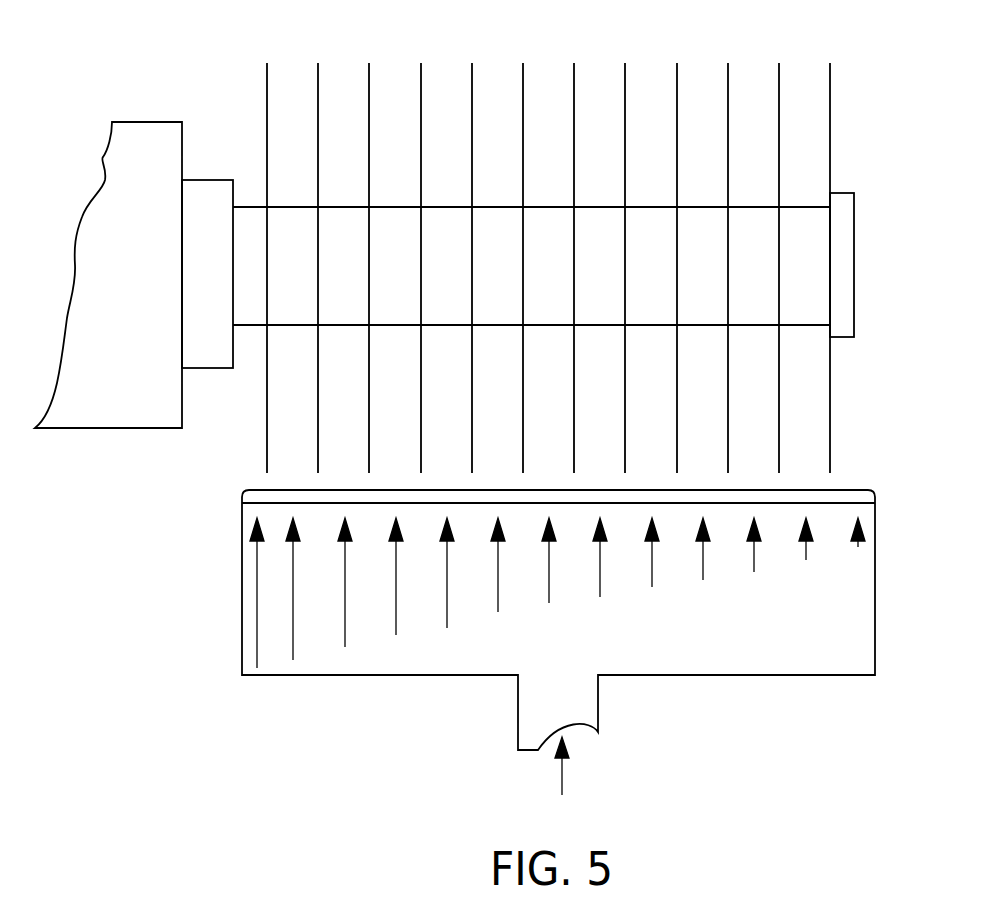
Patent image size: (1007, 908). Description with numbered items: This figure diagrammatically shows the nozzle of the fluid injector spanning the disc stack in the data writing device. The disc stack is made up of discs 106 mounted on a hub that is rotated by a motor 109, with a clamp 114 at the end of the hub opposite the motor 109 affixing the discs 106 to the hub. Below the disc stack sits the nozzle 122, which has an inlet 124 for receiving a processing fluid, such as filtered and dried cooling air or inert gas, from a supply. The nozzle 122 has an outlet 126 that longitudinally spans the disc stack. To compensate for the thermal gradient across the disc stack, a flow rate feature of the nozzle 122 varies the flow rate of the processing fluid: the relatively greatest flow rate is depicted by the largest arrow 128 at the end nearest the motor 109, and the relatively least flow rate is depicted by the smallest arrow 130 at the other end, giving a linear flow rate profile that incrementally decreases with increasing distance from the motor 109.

The discs 106 is at (626, 88).
The motor 109 is at (132, 428).
The clamp 114 is at (855, 205).
The nozzle 122 is at (302, 675).
The inlet 124 is at (555, 778).
The outlet 126 is at (850, 490).
The largest arrow 128 is at (257, 592).
The smallest arrow 130 is at (858, 540).